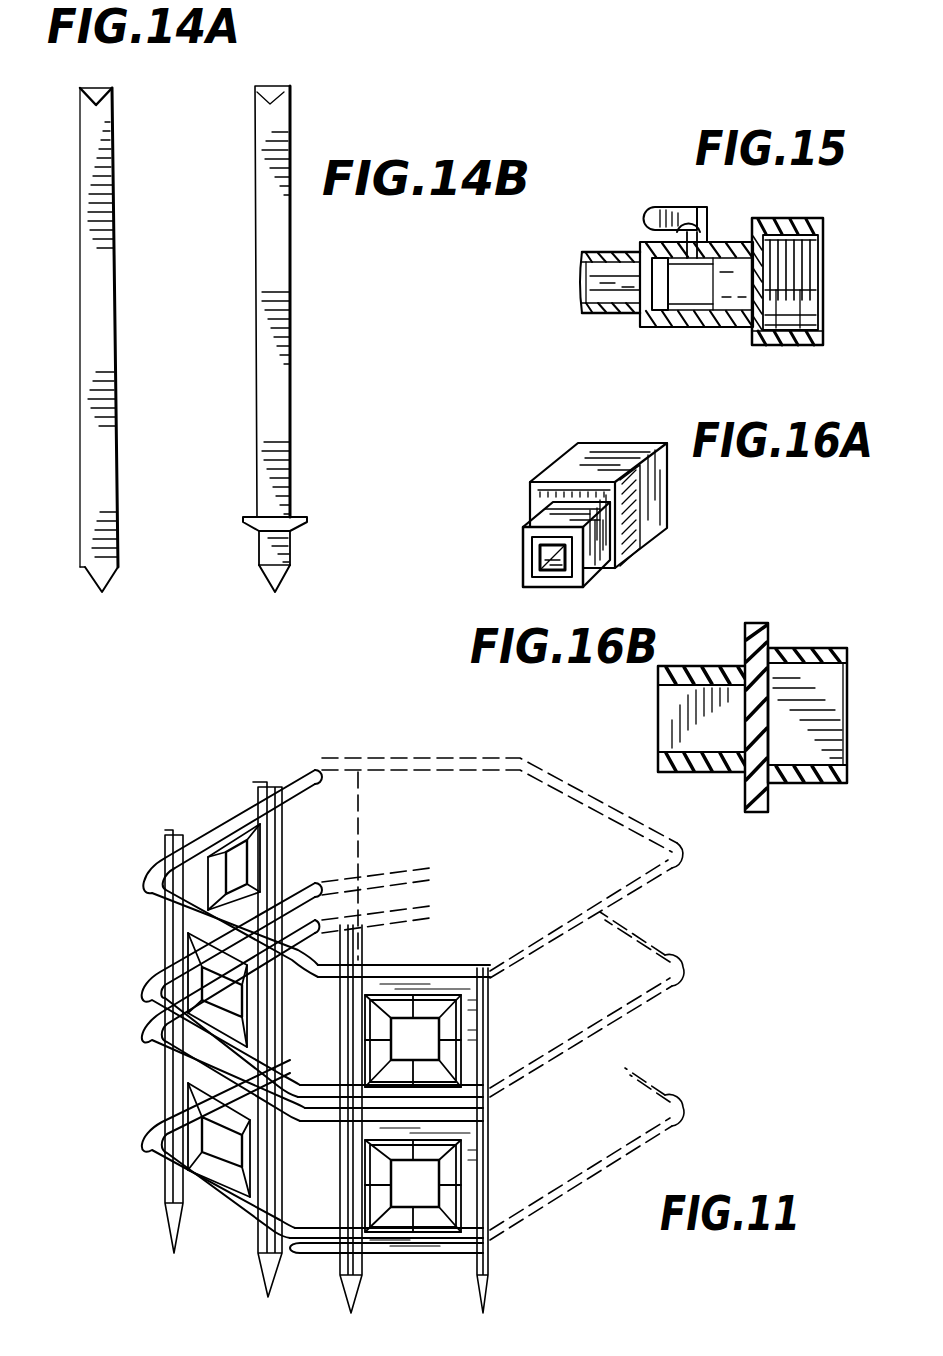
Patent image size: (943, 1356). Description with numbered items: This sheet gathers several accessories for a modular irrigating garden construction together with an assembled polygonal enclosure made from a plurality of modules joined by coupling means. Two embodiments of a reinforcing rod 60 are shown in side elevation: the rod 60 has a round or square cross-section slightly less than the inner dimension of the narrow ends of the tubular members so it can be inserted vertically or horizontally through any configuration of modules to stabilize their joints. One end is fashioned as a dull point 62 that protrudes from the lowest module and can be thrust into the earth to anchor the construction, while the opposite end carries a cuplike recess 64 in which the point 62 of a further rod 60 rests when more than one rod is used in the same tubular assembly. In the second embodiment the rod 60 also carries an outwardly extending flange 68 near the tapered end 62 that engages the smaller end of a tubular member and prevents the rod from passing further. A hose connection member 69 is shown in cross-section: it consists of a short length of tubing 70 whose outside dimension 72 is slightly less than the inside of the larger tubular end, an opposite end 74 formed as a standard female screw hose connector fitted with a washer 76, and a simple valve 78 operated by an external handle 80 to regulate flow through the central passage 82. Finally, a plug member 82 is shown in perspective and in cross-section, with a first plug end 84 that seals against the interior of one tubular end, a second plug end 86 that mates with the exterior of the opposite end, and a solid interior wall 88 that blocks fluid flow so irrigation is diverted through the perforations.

In FIG. 14A, the rod 60 is at (78, 284).
In FIG. 14B, the rod 60 is at (292, 283).
In FIG. 14A, the point 62 is at (97, 582).
In FIG. 14B, the point 62 is at (287, 578).
In FIG. 14A, the cuplike recess 64 is at (92, 88).
In FIG. 14B, the flange 68 is at (303, 516).
In FIG. 15, the hose connection member 69 is at (582, 273).
In FIG. 15, the tubing 70 is at (580, 300).
In FIG. 15, the outside dimension 72 is at (604, 320).
In FIG. 15, the opposite end 74 is at (822, 222).
In FIG. 15, the washer 76 is at (752, 340).
In FIG. 15, the valve 78 is at (690, 318).
In FIG. 15, the external handle 80 is at (612, 254).
In FIG. 15, the plug member 82 is at (790, 293).
In FIG. 16A, the plug member 82 is at (680, 522).
In FIG. 16B, the plug member 82 is at (786, 792).
In FIG. 16B, the first plug end 84 is at (825, 648).
In FIG. 16B, the second plug end 86 is at (658, 676).
In FIG. 16B, the solid interior wall 88 is at (758, 623).